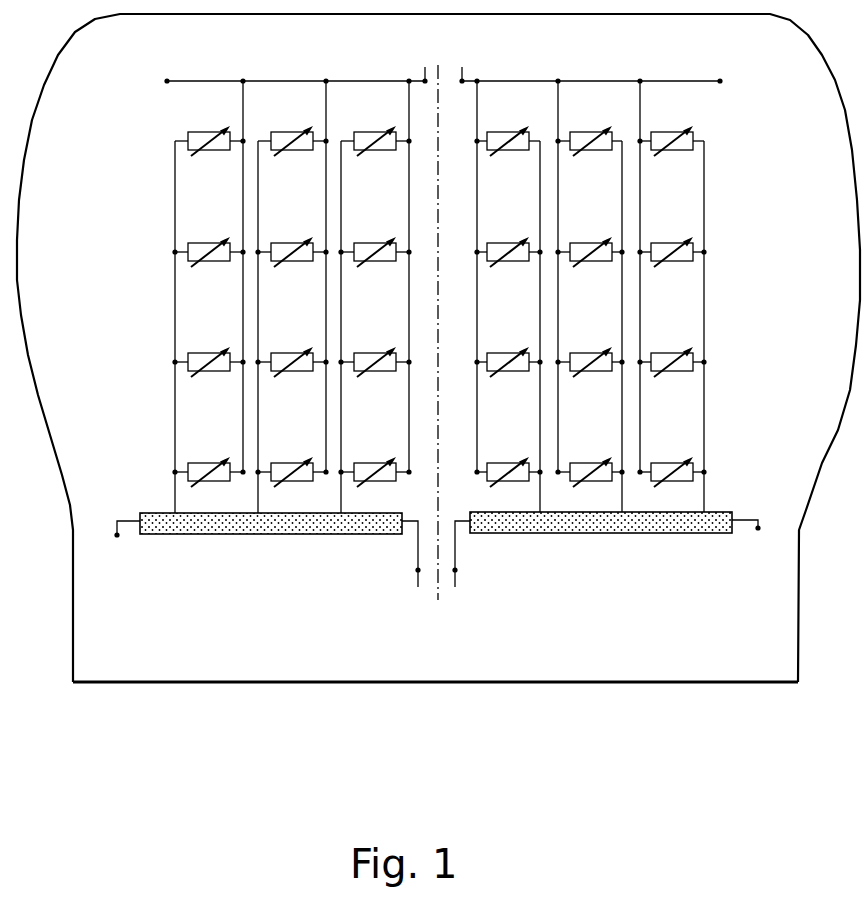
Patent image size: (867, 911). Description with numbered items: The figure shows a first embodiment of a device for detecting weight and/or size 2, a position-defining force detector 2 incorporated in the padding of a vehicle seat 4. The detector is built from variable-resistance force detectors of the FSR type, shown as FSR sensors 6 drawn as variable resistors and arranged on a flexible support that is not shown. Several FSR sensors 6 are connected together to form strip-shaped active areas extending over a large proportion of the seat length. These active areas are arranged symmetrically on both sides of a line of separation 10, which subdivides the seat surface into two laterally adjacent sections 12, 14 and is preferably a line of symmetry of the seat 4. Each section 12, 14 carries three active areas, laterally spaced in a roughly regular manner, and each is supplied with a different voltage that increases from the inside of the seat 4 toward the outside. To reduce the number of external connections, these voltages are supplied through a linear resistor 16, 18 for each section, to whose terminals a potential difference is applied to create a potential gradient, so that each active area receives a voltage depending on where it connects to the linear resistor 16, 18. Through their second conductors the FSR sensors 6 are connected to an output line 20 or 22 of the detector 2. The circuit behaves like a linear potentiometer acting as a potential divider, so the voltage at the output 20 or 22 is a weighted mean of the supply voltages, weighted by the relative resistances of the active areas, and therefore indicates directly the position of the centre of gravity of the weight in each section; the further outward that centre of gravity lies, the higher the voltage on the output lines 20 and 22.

The device for detecting weight and/or size 2 is at (235, 347).
The seat 4 is at (80, 241).
The FSR sensor 6 is at (277, 248).
The line of separation 10 is at (440, 615).
The section of the seat 12 is at (270, 692).
The section of the seat 14 is at (606, 692).
The linear resistor 16 is at (152, 538).
The linear resistor 18 is at (717, 535).
The output line 20 is at (167, 80).
The output line 22 is at (720, 80).